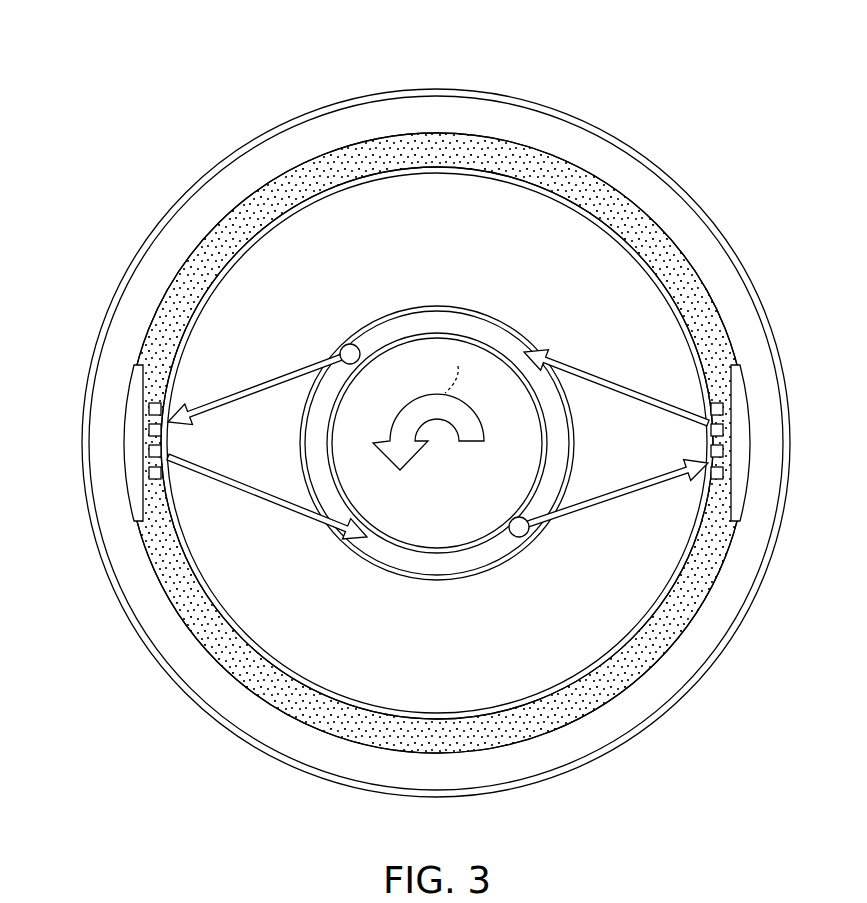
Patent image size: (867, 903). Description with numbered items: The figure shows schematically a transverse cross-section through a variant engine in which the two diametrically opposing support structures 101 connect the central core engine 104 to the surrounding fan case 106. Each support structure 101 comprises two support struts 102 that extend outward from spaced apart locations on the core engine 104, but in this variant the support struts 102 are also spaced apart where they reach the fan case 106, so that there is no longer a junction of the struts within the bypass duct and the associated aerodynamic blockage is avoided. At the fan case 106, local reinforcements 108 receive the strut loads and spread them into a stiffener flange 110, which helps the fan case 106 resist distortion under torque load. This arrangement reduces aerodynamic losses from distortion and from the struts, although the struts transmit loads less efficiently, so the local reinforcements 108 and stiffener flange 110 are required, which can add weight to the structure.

The support structure 101 is at (636, 521).
The support strut 102 is at (262, 386).
The core engine 104 is at (437, 443).
The fan case 106 is at (207, 287).
The local reinforcement 108 is at (148, 443).
The stiffener flange 110 is at (437, 135).